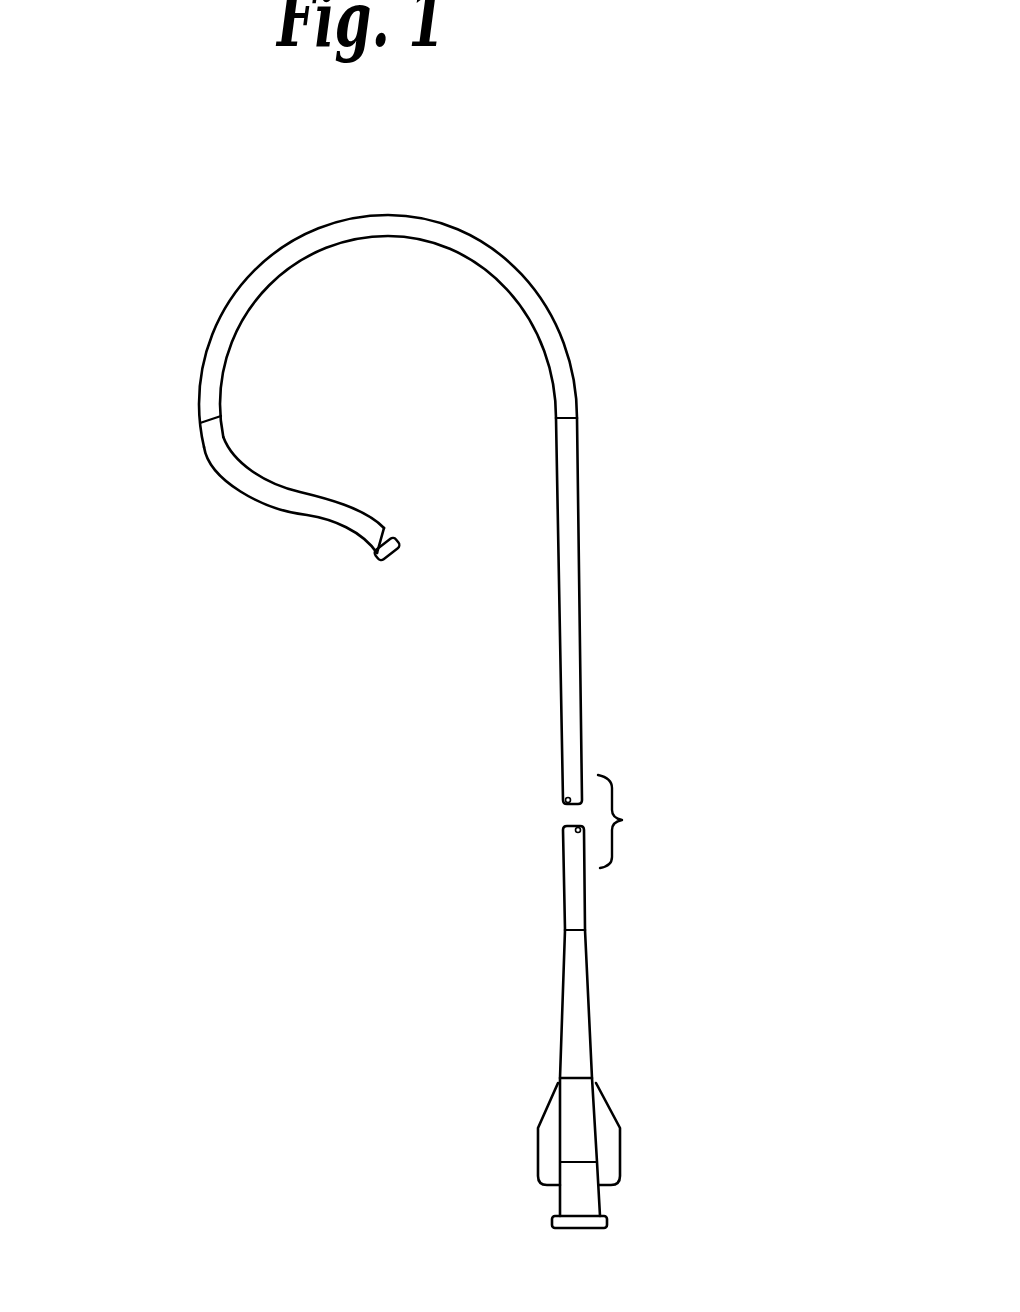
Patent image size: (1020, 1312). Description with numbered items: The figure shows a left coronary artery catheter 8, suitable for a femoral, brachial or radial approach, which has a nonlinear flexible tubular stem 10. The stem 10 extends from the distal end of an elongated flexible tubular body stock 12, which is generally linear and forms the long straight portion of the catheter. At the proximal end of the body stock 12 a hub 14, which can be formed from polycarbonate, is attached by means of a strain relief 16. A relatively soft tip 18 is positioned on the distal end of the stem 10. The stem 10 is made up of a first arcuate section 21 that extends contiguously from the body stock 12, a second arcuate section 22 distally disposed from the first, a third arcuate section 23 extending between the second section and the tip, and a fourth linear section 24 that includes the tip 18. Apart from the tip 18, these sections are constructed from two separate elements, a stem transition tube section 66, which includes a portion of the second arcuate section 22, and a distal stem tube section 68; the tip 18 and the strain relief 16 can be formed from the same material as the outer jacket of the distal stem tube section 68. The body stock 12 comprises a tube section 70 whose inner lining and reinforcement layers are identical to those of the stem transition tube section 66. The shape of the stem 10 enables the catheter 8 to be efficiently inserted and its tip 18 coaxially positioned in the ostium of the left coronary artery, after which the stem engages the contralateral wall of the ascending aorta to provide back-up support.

The left coronary artery catheter 8 is at (728, 296).
The flexible tubular stem 10 is at (517, 235).
The elongated flexible tubular body stock 12 is at (595, 657).
The hub 14 is at (636, 1153).
The strain relief 16 is at (604, 1011).
The tip 18 is at (396, 558).
The first arcuate section 21 is at (438, 256).
The second arcuate section 22 is at (249, 441).
The third arcuate section 23 is at (357, 494).
The fourth linear section 24 is at (389, 513).
The stem transition tube section 66 is at (322, 239).
The distal stem tube section 68 is at (213, 466).
The tube section of body stock 70 is at (583, 755).